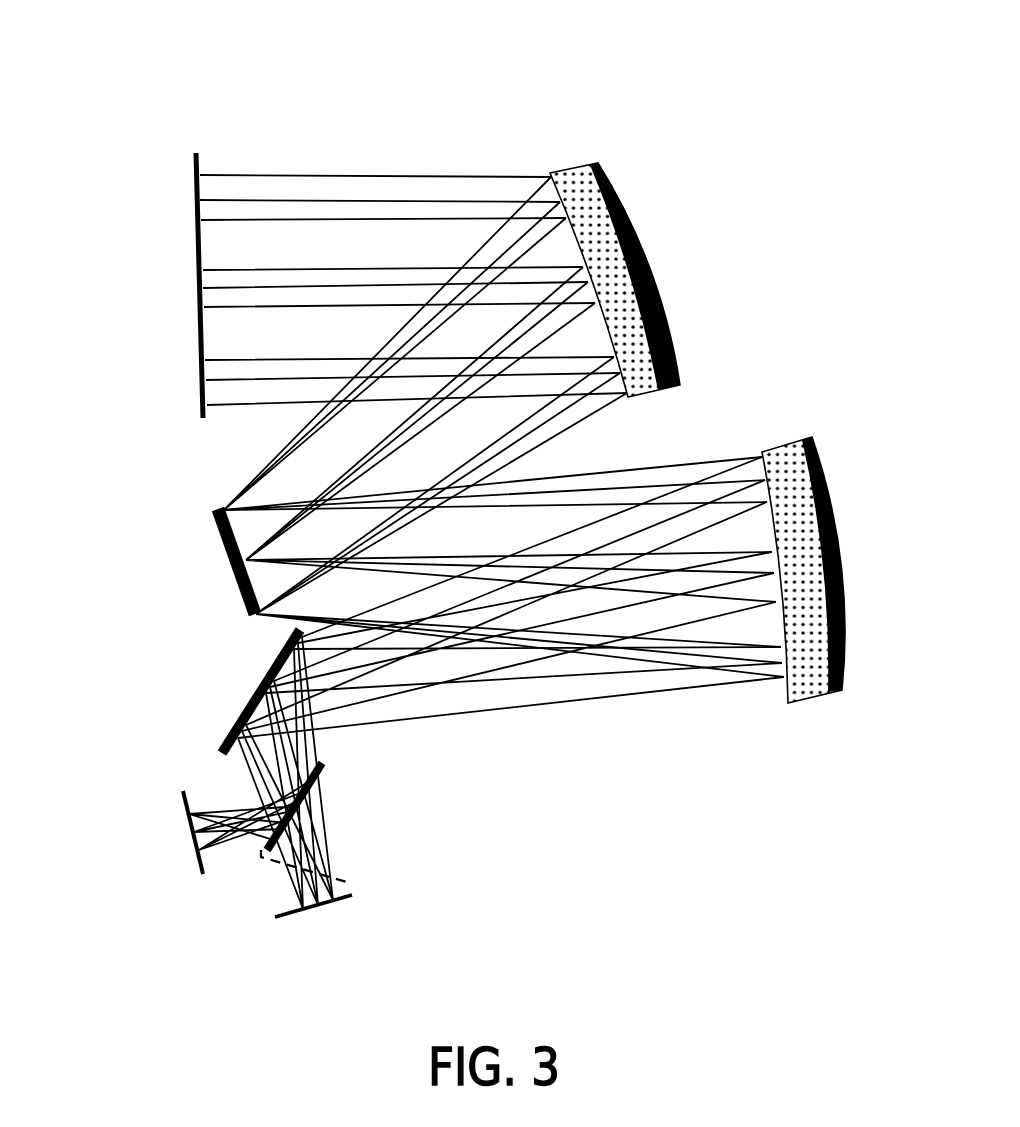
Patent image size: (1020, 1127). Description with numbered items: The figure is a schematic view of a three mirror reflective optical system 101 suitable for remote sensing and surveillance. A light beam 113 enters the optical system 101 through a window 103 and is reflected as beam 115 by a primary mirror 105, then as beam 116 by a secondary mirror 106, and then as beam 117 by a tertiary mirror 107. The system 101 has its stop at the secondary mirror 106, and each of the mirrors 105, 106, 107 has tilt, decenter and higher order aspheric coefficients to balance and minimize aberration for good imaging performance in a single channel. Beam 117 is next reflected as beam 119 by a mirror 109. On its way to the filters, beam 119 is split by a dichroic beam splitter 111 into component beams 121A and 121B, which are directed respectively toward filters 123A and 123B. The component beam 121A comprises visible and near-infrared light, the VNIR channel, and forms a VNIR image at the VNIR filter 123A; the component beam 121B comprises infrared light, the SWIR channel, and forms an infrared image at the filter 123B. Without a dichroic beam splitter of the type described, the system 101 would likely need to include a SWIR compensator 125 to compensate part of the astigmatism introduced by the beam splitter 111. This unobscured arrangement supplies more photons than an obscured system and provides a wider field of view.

The three mirror reflective optical system 101 is at (773, 73).
The window 103 is at (195, 200).
The primary mirror 105 is at (648, 262).
The secondary mirror 106 is at (221, 560).
The tertiary mirror 107 is at (840, 585).
The mirror 109 is at (248, 706).
The dichroic beam splitter 111 is at (320, 765).
The light beam 113 is at (333, 173).
The beam 115 is at (588, 423).
The beam 116 is at (610, 465).
The beam 117 is at (563, 705).
The beam 119 is at (317, 740).
The component beam 121A is at (332, 817).
The component beam 121B is at (229, 854).
The VNIR filter 123A is at (345, 900).
The filter 123B is at (183, 797).
The SWIR compensator 125 is at (348, 875).